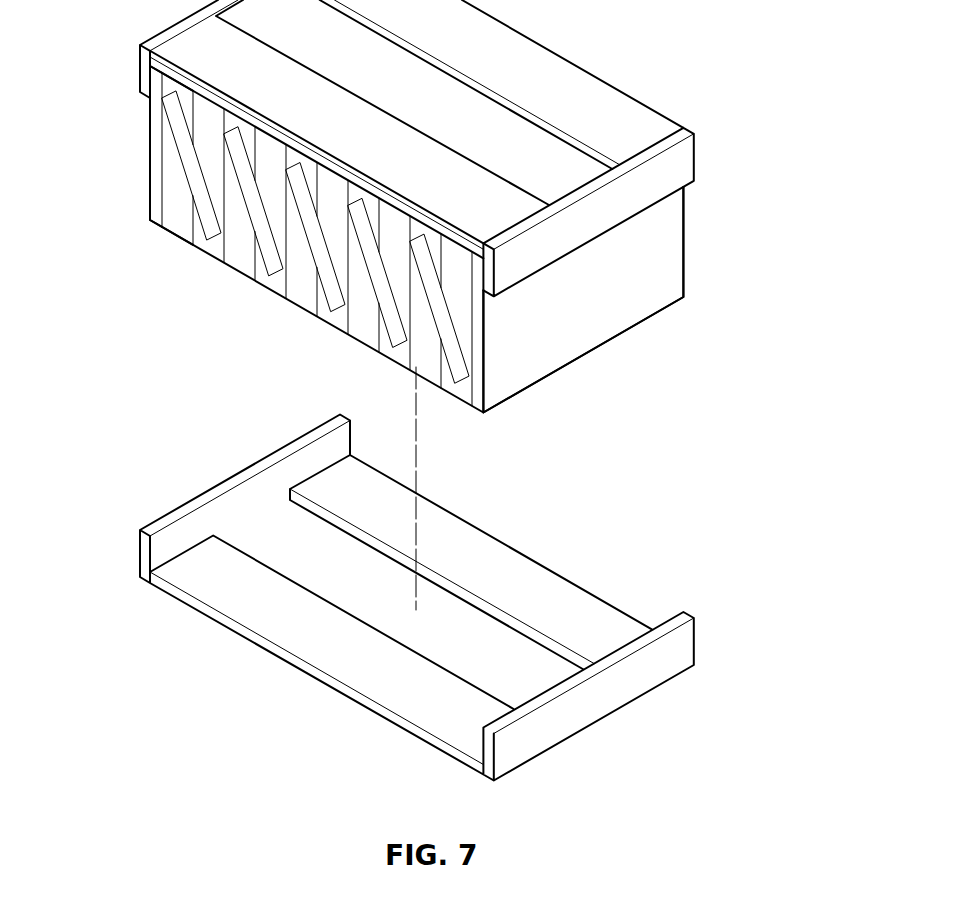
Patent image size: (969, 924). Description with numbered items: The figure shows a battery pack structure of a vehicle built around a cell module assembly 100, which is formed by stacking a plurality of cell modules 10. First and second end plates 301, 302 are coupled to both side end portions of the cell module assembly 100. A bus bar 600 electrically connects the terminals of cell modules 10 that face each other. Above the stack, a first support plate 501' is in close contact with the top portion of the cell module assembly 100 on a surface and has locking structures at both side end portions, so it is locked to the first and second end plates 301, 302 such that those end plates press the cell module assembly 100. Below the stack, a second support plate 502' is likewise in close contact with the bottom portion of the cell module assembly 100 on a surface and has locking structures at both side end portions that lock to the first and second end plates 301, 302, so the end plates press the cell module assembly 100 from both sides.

The cell module 10 is at (181, 229).
The cell module assembly 100 is at (249, 298).
The first end plate 301 is at (157, 121).
The second end plate 302 is at (662, 245).
The first support plate 501' is at (476, 148).
The second support plate 502' is at (476, 598).
The bus bar 600 is at (193, 175).